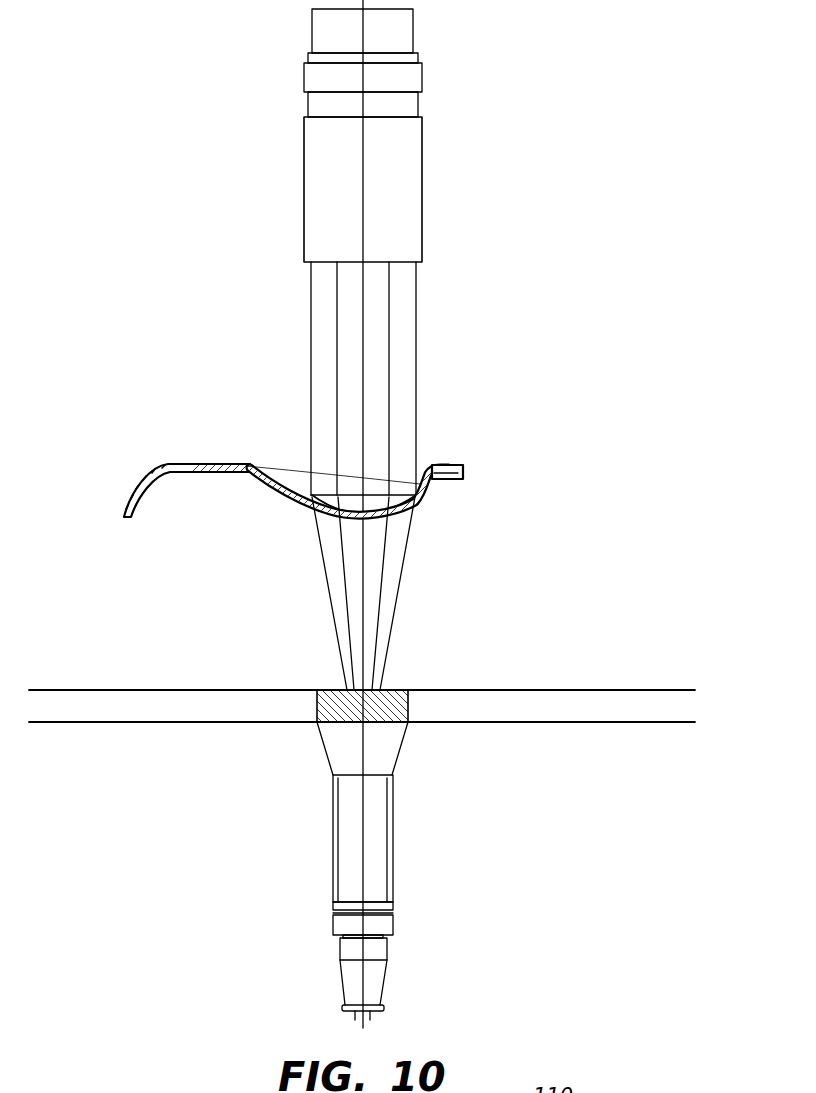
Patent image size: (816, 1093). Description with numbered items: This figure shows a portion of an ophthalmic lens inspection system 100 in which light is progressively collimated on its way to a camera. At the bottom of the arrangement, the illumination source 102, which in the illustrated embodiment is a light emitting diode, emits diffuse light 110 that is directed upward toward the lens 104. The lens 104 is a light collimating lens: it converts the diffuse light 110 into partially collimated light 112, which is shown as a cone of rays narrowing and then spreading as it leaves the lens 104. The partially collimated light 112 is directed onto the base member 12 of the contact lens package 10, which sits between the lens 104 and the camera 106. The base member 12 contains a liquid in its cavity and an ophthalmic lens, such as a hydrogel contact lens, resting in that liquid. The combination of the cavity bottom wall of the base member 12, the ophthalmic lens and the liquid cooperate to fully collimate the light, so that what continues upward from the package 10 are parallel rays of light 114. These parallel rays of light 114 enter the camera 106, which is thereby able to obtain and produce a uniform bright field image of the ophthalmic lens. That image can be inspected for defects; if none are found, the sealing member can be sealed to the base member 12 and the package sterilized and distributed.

The ophthalmic lens inspection system 100 is at (560, 288).
The camera 106 is at (422, 158).
The parallel rays of light 114 is at (323, 302).
The contact lens package 10 is at (325, 439).
The base member 12 is at (210, 462).
The partially collimated light 112 is at (338, 587).
The lens 104 is at (408, 700).
The diffuse light 110 is at (347, 742).
The illumination source 102 is at (393, 850).